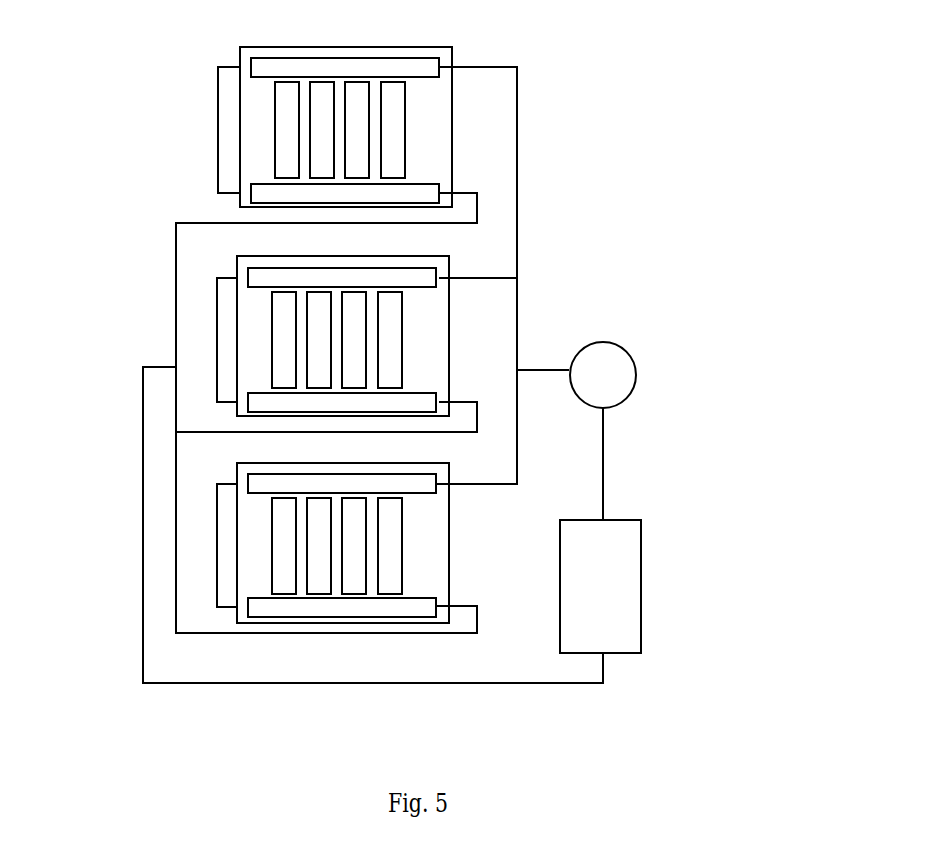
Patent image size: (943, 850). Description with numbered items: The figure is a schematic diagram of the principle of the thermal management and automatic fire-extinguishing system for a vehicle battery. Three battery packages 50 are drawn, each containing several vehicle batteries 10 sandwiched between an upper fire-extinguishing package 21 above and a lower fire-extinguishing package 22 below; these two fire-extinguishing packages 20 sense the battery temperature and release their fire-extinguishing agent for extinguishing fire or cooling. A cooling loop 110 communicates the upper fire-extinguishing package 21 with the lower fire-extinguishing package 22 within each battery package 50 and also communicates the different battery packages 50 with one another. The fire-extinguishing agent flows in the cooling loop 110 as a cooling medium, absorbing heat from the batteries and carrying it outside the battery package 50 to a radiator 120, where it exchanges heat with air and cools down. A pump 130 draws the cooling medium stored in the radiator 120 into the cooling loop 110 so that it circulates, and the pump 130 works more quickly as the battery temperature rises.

The vehicle battery 10 is at (391, 138).
The fire-extinguishing package 20 is at (526, 125).
The upper fire-extinguishing package 21 is at (423, 72).
The lower fire-extinguishing package 22 is at (418, 194).
The battery package 50 is at (242, 337).
The cooling loop 110 is at (217, 168).
The radiator 120 is at (631, 631).
The pump 130 is at (628, 370).